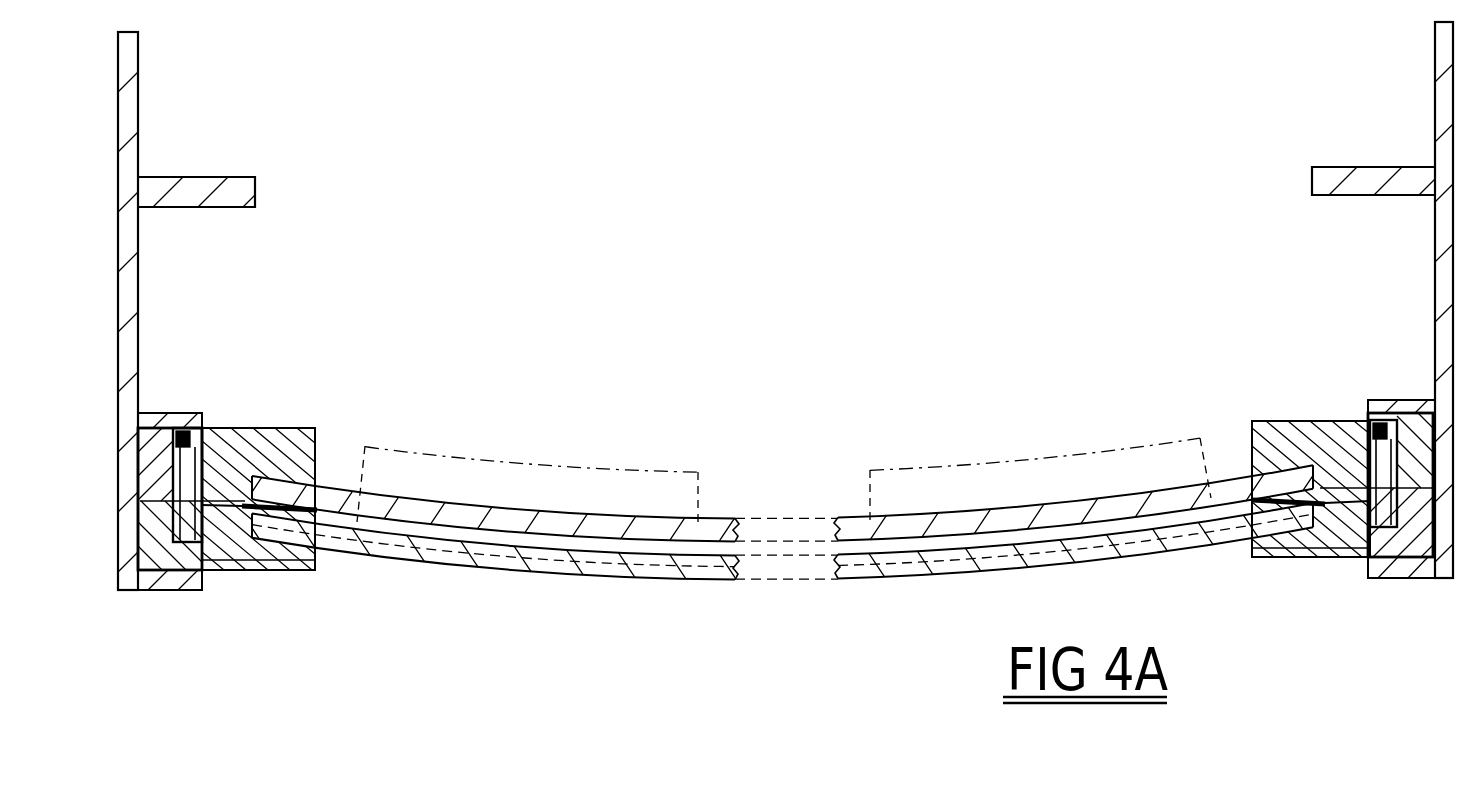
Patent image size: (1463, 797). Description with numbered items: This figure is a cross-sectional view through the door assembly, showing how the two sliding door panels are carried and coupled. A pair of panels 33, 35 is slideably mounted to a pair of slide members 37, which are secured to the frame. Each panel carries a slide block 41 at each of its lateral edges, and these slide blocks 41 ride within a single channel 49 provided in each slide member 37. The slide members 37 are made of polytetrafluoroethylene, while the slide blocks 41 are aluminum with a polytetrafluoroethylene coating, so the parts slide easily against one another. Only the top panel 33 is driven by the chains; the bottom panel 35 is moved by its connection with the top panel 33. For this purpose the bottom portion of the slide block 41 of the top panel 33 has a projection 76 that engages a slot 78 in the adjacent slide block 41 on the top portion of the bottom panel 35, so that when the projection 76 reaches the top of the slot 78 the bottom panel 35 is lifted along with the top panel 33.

The top panel 33 is at (705, 520).
The bottom panel 35 is at (858, 576).
The slide member 37 is at (167, 416).
The slide block 41 is at (318, 430).
The channel 49 is at (213, 572).
The projection 76 is at (204, 462).
The slot 78 is at (172, 556).